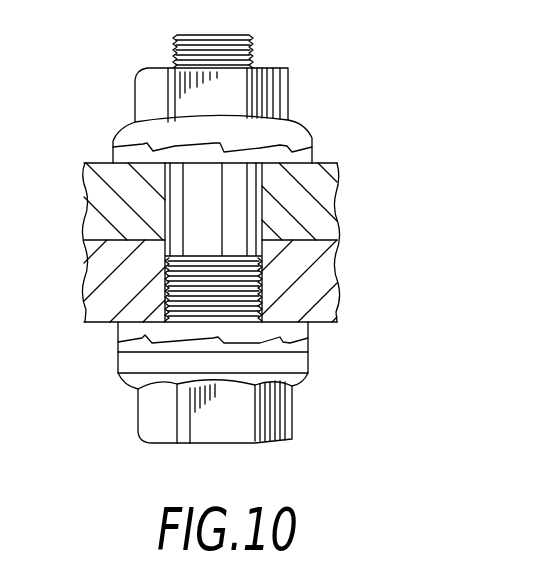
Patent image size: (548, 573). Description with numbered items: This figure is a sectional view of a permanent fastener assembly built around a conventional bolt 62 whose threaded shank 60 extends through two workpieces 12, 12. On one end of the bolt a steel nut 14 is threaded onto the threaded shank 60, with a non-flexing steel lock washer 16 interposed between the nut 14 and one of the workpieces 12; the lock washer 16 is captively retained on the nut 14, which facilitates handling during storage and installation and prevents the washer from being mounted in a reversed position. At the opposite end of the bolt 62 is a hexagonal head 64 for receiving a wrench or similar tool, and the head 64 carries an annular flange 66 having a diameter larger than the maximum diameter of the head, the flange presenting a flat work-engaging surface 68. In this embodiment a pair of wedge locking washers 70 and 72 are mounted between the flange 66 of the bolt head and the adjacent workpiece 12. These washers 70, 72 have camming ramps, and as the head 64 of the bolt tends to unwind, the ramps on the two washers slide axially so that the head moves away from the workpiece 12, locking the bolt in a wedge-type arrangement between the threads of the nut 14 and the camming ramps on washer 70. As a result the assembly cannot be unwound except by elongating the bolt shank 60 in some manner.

The threaded shank 60 is at (173, 44).
The nut 14 is at (277, 68).
The lock washer 16 is at (312, 150).
The workpiece 12 is at (330, 200).
The wedge locking washer 70 is at (300, 332).
The flat work-engaging surface 68 is at (130, 351).
The wedge locking washer 72 is at (310, 348).
The annular flange 66 is at (310, 375).
The bolt 62 is at (130, 421).
The hexagonal head 64 is at (295, 417).